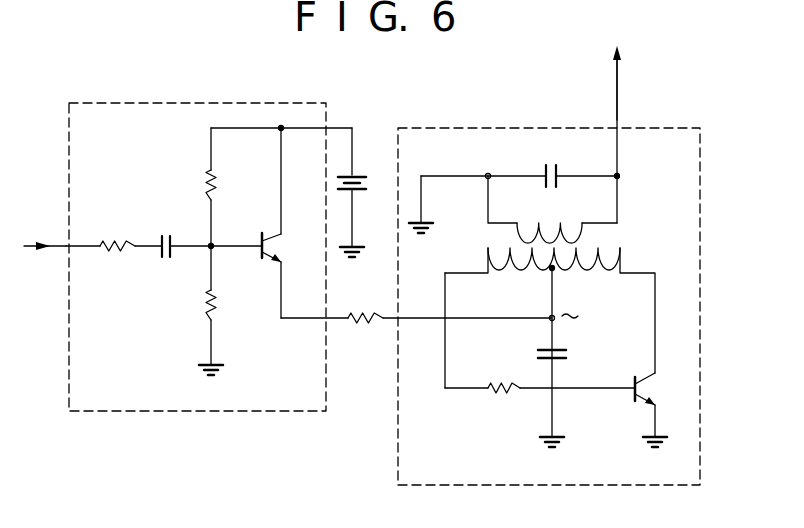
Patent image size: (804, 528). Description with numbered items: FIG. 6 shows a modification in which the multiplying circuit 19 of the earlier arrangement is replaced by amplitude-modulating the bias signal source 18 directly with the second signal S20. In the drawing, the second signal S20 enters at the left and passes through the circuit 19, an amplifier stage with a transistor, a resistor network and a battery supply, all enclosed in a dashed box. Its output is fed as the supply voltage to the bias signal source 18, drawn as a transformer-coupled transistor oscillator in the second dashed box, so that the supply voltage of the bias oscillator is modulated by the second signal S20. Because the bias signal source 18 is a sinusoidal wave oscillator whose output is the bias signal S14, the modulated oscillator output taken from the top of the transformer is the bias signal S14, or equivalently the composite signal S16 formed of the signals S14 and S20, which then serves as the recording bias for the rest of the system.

The bias signal source 18 is at (436, 454).
The multiplying circuit 19 is at (164, 390).
The second signal S20 is at (56, 235).
The bias signal S14 is at (634, 134).
The composite signal S16 is at (660, 84).